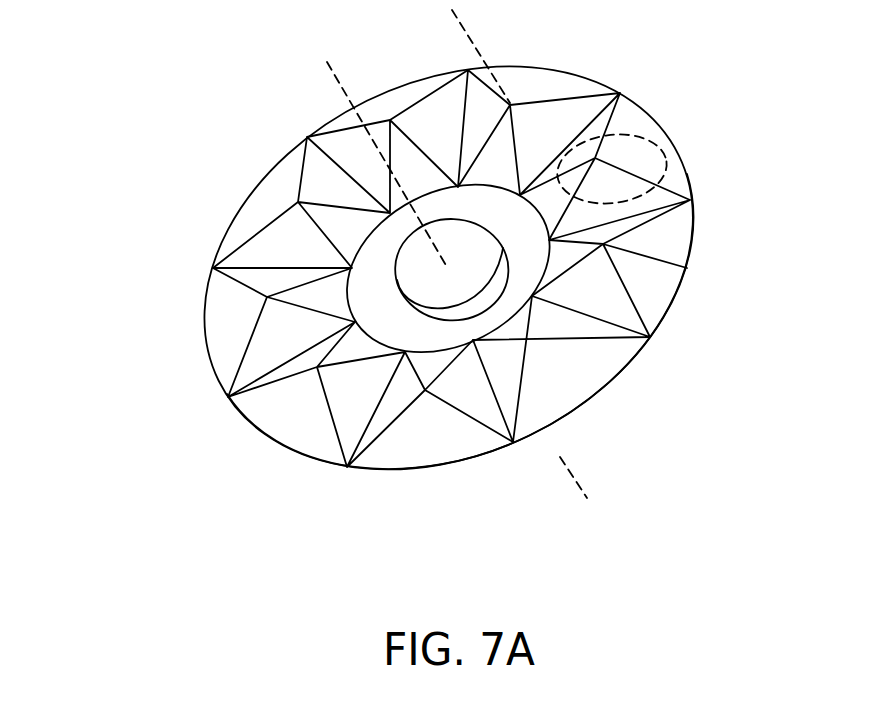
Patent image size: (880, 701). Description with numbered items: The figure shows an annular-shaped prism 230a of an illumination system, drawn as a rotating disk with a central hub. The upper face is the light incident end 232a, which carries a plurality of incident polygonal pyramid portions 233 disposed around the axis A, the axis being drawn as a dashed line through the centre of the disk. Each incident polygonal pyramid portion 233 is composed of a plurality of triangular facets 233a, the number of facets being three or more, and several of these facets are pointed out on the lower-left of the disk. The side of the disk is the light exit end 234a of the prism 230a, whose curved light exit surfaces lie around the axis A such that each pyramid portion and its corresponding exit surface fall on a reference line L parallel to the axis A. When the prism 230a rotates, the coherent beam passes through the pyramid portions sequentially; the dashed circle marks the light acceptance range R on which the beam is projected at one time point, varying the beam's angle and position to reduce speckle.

The prism 230a is at (717, 512).
The light incident end 232a is at (672, 312).
The light exit end 234a is at (688, 320).
The incident polygonal pyramid portion 233 is at (313, 549).
The triangular facets 233a is at (285, 368).
The axis A is at (342, 85).
The reference line L is at (475, 48).
The light acceptance range R is at (647, 137).